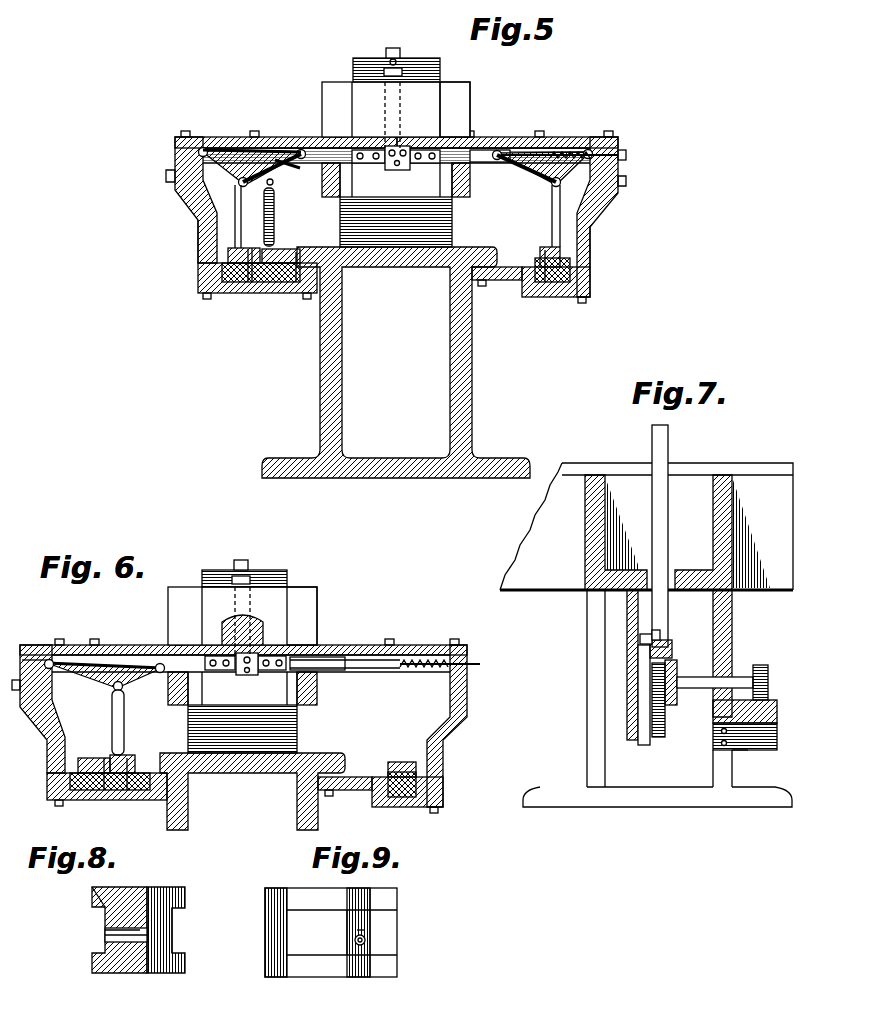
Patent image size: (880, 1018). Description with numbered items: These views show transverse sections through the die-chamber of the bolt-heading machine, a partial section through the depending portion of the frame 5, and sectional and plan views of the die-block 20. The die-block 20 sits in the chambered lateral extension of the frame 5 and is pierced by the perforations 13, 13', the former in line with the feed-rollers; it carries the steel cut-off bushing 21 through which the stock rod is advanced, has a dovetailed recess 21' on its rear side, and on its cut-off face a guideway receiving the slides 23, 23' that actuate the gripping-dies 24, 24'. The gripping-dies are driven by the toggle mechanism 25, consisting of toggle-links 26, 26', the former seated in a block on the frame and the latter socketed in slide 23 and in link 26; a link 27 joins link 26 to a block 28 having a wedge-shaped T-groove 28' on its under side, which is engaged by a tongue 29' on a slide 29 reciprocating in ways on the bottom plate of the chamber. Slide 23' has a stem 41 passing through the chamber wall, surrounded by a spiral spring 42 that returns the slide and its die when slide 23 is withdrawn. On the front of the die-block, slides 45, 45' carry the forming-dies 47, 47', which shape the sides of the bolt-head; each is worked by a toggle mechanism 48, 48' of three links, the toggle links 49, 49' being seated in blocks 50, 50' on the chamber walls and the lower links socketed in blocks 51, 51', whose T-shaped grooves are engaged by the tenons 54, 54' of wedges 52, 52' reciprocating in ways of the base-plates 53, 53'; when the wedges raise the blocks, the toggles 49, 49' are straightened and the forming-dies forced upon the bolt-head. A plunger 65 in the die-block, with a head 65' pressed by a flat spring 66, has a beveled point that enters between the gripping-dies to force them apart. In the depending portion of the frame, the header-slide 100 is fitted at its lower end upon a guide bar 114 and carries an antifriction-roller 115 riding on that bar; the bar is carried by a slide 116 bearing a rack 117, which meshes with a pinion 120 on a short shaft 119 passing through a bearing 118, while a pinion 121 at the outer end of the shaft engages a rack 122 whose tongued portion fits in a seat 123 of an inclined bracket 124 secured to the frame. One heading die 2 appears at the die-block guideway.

In FIG. 9, the heading die 2 is at (366, 940).
In FIG. 5, the frame 5 is at (342, 366).
In FIG. 6, the frame 5 is at (297, 806).
In FIG. 7, the frame 5 is at (587, 705).
In FIG. 8, the perforation 13 is at (125, 964).
In FIG. 9, the perforation 13 is at (341, 957).
In FIG. 8, the perforation 13' is at (98, 921).
In FIG. 9, the perforation 13' is at (394, 903).
In FIG. 5, the die-block 20 is at (396, 164).
In FIG. 6, the die-block 20 is at (242, 670).
In FIG. 8, the die-block 20 is at (175, 895).
In FIG. 8, the cut-off bushing 21 is at (152, 940).
In FIG. 8, the recess 21' is at (66, 890).
In FIG. 6, the slide 23 is at (243, 632).
In FIG. 5, the slide 23' is at (522, 133).
In FIG. 6, the slide 23' is at (356, 677).
In FIG. 6, the gripping-die 24 is at (251, 674).
In FIG. 6, the gripping-die 24' is at (303, 660).
In FIG. 5, the toggle mechanism 25 is at (289, 190).
In FIG. 6, the toggle mechanism 25 is at (97, 722).
In FIG. 5, the toggle-link 26 is at (247, 216).
In FIG. 6, the toggle-link 26 is at (105, 677).
In FIG. 5, the toggle-link 26' is at (296, 173).
In FIG. 6, the toggle-link 26' is at (104, 666).
In FIG. 5, the link 27 is at (276, 230).
In FIG. 6, the link 27 is at (124, 730).
In FIG. 5, the block 28 is at (296, 270).
In FIG. 6, the block 28 is at (134, 752).
In FIG. 6, the T-groove 28' is at (94, 752).
In FIG. 5, the slide 29 is at (295, 295).
In FIG. 6, the slide 29 is at (94, 793).
In FIG. 5, the tongue 29' is at (247, 283).
In FIG. 6, the tongue 29' is at (129, 795).
In FIG. 5, the stem 41 is at (620, 152).
In FIG. 6, the stem 41 is at (451, 665).
In FIG. 5, the spiral spring 42 is at (592, 160).
In FIG. 6, the spiral spring 42 is at (440, 670).
In FIG. 5, the slide 45 is at (282, 124).
In FIG. 5, the slide 45' is at (506, 129).
In FIG. 5, the forming-die 47 is at (396, 170).
In FIG. 5, the forming-die 47' is at (491, 170).
In FIG. 5, the toggle mechanism 48 is at (252, 176).
In FIG. 5, the toggle mechanism 48' is at (543, 199).
In FIG. 5, the link 49 is at (217, 162).
In FIG. 5, the link 49' is at (272, 148).
In FIG. 5, the block 50 is at (155, 188).
In FIG. 5, the block 50' is at (640, 188).
In FIG. 5, the block 51 is at (209, 263).
In FIG. 5, the block 51' is at (586, 258).
In FIG. 6, the block 51' is at (396, 756).
In FIG. 5, the wedge 52 is at (251, 290).
In FIG. 6, the wedge 52 is at (93, 800).
In FIG. 5, the wedge 52' is at (552, 292).
In FIG. 6, the wedge 52' is at (402, 802).
In FIG. 5, the base-plate 53 is at (388, 220).
In FIG. 6, the base-plate 53 is at (239, 729).
In FIG. 7, the base-plate 53 is at (646, 590).
In FIG. 5, the base-plate 53' is at (497, 289).
In FIG. 5, the tenon 54 is at (235, 296).
In FIG. 5, the tenon 54' is at (526, 299).
In FIG. 5, the plunger 65 is at (379, 70).
In FIG. 6, the plunger 65 is at (249, 566).
In FIG. 5, the head 65' is at (370, 56).
In FIG. 6, the head 65' is at (224, 563).
In FIG. 5, the flat spring 66 is at (398, 52).
In FIG. 6, the flat spring 66 is at (248, 560).
In FIG. 7, the slide 100 is at (668, 448).
In FIG. 7, the guide bar 114 is at (660, 636).
In FIG. 7, the antifriction-roller 115 is at (640, 636).
In FIG. 7, the slide 116 is at (645, 740).
In FIG. 7, the rack 117 is at (665, 720).
In FIG. 7, the bearing 118 is at (748, 677).
In FIG. 7, the shaft 119 is at (680, 680).
In FIG. 7, the pinion 120 is at (672, 645).
In FIG. 7, the pinion 121 is at (768, 675).
In FIG. 7, the rack 122 is at (775, 722).
In FIG. 7, the seat 123 is at (758, 750).
In FIG. 7, the inclined bracket 124 is at (740, 752).